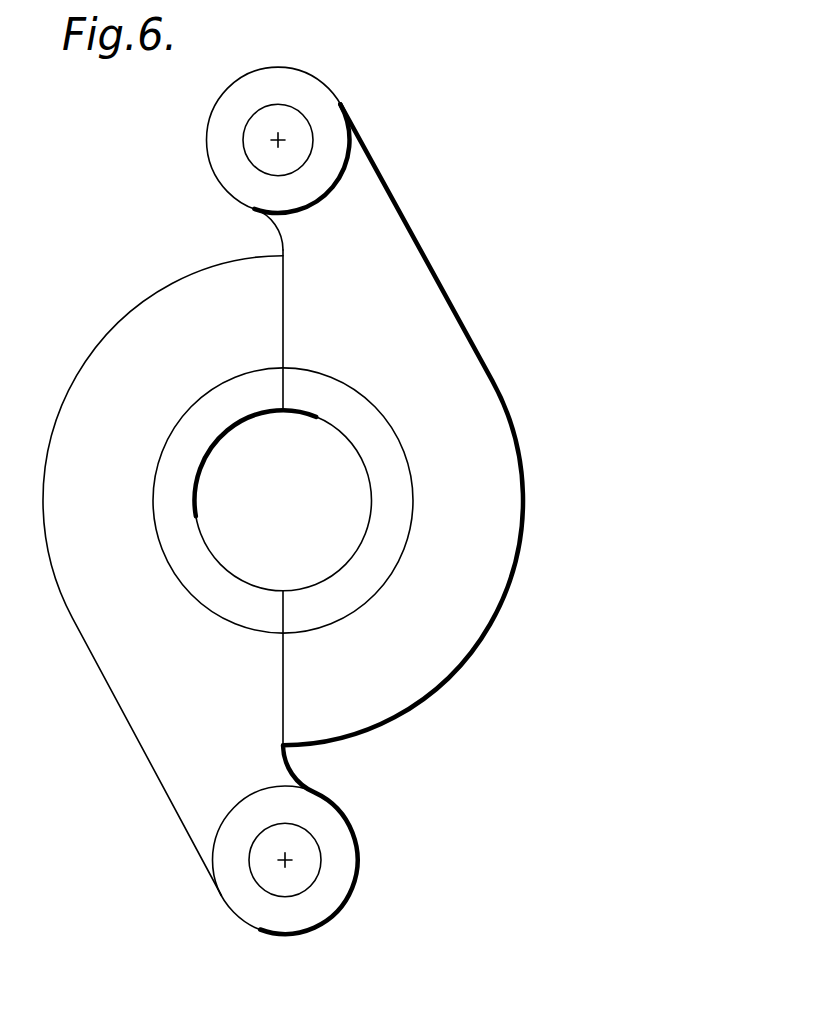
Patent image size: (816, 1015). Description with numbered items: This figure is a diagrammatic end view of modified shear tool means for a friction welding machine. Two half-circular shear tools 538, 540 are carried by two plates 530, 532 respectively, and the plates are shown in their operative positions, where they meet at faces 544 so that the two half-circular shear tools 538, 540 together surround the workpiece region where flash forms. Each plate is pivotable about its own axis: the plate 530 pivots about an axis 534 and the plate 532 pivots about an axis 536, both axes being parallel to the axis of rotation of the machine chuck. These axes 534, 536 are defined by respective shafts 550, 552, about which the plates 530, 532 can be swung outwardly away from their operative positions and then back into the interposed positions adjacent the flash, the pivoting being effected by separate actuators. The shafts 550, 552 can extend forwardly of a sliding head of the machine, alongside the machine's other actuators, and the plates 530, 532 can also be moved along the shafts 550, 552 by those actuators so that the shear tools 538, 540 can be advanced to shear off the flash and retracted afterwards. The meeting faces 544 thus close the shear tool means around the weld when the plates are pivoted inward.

The plate 530 is at (432, 310).
The plate 532 is at (122, 655).
The axis 534 is at (283, 139).
The axis 536 is at (285, 843).
The half-circular shear tool 538 is at (400, 471).
The half-circular shear tool 540 is at (160, 520).
The faces 544 is at (284, 291).
The shaft 550 is at (300, 119).
The shaft 552 is at (305, 855).